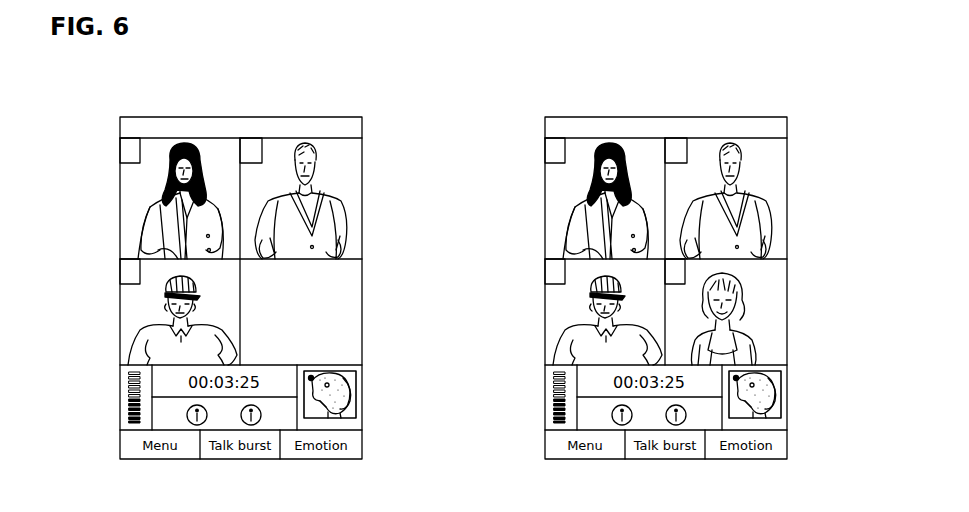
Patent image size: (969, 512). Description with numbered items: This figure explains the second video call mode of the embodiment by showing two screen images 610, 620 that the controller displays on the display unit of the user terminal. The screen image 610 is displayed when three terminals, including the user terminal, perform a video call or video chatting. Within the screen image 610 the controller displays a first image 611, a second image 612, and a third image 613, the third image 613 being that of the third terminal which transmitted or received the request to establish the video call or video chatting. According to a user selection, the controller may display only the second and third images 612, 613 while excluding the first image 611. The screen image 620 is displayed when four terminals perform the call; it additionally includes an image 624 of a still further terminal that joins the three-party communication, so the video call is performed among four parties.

The screen image 610 is at (238, 117).
The first image 611 is at (352, 168).
The second image 612 is at (130, 192).
The third image 613 is at (130, 324).
The screen image 620 is at (664, 117).
The image of a still third terminal 624 is at (778, 324).